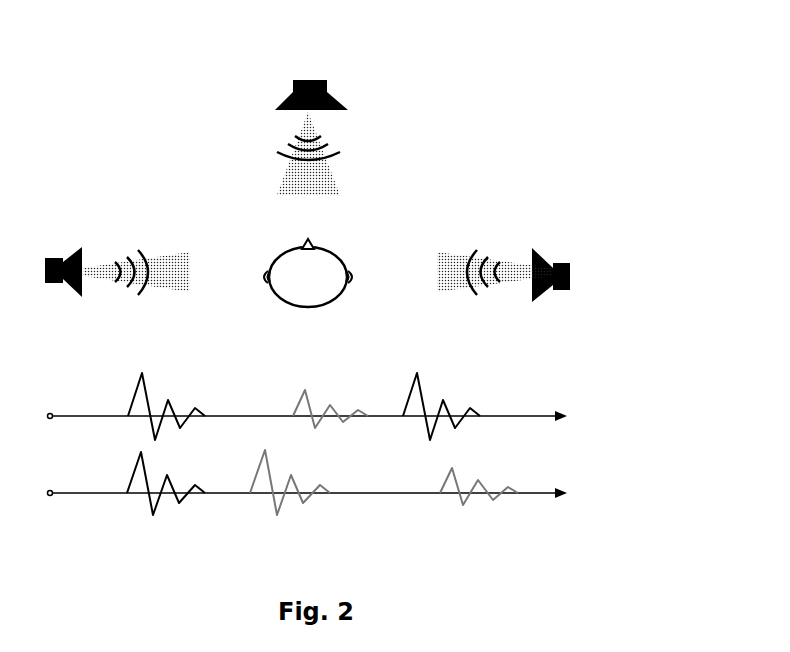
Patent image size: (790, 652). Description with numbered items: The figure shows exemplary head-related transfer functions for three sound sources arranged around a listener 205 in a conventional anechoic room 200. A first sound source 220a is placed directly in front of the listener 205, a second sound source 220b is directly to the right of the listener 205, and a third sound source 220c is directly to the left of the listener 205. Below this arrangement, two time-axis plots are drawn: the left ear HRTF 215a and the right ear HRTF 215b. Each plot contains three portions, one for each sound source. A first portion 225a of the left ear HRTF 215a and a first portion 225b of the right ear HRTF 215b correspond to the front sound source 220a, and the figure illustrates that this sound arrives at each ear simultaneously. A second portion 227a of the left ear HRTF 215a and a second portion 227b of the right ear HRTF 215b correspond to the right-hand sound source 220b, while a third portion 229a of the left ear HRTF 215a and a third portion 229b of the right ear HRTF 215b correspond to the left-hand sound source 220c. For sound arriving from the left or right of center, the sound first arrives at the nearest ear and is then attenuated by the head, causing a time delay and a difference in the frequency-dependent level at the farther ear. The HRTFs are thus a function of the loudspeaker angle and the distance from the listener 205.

The anechoic room 200 is at (662, 86).
The listener 205 is at (340, 252).
The sound source 220a is at (308, 80).
The sound source 220b is at (562, 262).
The sound source 220c is at (50, 258).
The left ear HRTF 215a is at (595, 407).
The right ear HRTF 215b is at (595, 486).
The first portion of the left ear HRTF 225a is at (140, 378).
The second portion of the left ear HRTF 227a is at (304, 388).
The third portion of the left ear HRTF 229a is at (420, 372).
The first portion of the right ear HRTF 225b is at (156, 518).
The second portion of the right ear HRTF 227b is at (278, 518).
The third portion of the right ear HRTF 229b is at (466, 508).